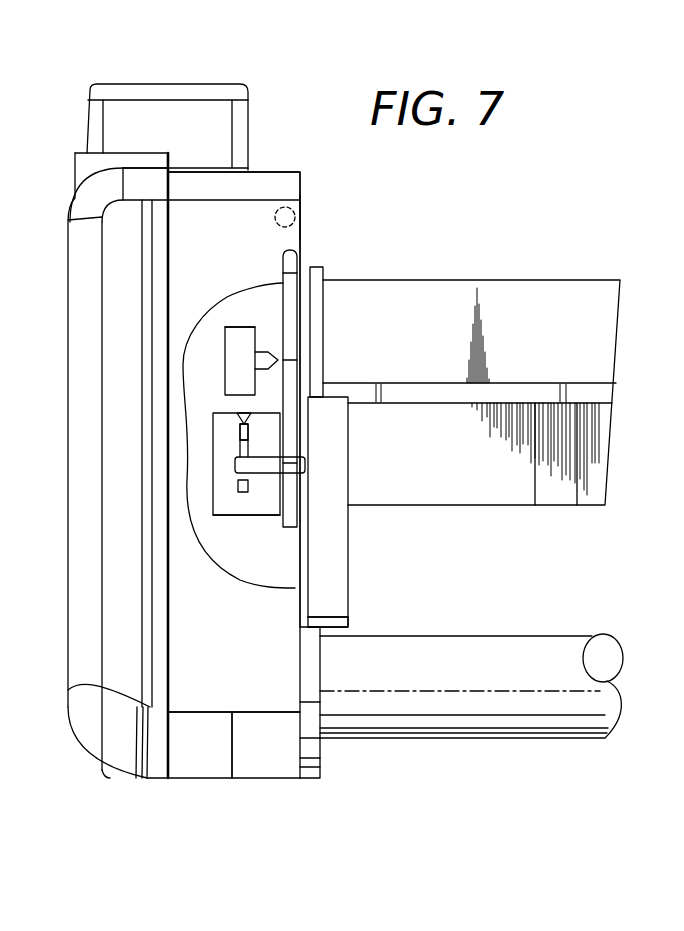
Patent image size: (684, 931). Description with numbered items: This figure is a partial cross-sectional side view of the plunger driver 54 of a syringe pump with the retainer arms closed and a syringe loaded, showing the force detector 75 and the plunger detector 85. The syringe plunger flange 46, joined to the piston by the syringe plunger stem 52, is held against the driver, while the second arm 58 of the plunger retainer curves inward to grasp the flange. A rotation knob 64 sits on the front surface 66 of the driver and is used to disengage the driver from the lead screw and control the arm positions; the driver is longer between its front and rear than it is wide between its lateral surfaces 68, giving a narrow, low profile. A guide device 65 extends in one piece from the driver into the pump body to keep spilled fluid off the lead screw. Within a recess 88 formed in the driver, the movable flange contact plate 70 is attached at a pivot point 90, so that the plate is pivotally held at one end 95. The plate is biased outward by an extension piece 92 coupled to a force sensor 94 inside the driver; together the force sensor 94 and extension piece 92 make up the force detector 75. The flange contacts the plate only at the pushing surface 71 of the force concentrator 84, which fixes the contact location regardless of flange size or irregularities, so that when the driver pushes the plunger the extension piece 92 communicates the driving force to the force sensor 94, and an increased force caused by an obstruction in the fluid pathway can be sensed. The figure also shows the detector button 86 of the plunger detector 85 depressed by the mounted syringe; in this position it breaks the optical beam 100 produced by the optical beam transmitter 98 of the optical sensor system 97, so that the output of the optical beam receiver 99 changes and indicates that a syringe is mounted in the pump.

The syringe plunger flange 46 is at (317, 317).
The syringe plunger stem 52 is at (505, 302).
The plunger driver 54 is at (88, 753).
The second arm 58 is at (332, 598).
The rotation knob 64 is at (97, 91).
The guide device 65 is at (458, 658).
The front surface 66 is at (270, 173).
The lateral surfaces 68 is at (243, 683).
The movable flange contact plate 70 is at (292, 372).
The pushing surface 71 is at (310, 445).
The force detector 75 is at (236, 327).
The force concentrator 84 is at (300, 423).
The plunger detector 85 is at (240, 513).
The detector button 86 is at (285, 463).
The recess 88 is at (285, 255).
The pivot point 90 is at (300, 213).
The extension piece 92 is at (262, 360).
The force sensor 94 is at (237, 352).
The end 95 is at (303, 216).
The optical sensor system 97 is at (214, 478).
The optical beam transmitter 98 is at (240, 432).
The optical beam receiver 99 is at (237, 487).
The optical beam 100 is at (235, 443).